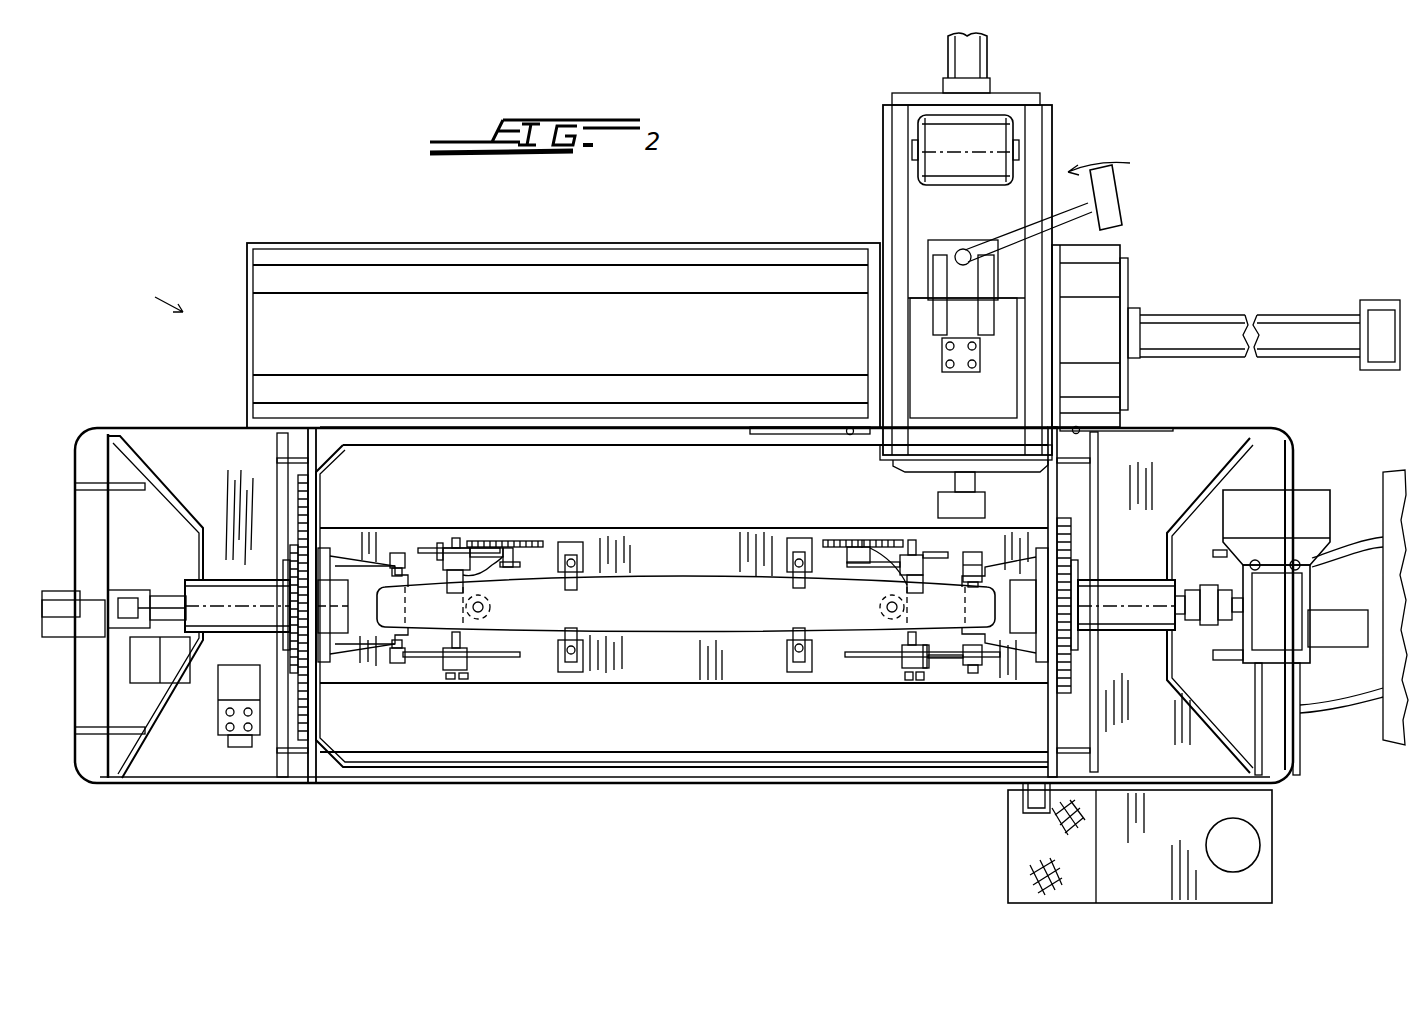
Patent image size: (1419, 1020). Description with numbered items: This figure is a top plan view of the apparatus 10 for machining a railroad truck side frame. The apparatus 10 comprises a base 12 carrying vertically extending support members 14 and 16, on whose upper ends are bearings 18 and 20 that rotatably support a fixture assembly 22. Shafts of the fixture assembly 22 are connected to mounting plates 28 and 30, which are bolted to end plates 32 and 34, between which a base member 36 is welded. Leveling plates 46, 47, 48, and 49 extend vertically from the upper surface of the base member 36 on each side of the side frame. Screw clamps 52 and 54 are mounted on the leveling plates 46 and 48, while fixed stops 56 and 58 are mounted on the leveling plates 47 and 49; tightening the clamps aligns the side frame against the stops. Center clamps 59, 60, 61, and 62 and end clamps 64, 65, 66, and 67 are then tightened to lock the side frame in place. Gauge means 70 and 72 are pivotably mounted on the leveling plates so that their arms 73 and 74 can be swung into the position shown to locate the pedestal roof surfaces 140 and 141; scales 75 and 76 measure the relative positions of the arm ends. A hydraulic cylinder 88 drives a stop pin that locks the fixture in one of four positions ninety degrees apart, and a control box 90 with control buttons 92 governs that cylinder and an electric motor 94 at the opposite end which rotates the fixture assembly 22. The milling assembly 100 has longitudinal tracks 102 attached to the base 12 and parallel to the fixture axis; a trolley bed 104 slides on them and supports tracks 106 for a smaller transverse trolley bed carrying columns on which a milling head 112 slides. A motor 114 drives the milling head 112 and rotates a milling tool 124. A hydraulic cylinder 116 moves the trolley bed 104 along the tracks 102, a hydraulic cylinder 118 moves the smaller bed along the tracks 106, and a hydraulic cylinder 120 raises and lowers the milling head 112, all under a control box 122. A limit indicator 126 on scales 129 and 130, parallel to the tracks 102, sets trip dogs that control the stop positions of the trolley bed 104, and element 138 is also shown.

The apparatus 10 is at (154, 294).
The base 12 is at (172, 424).
The support member 14 is at (185, 512).
The support member 16 is at (1180, 522).
The bearing 18 is at (236, 606).
The bearing 20 is at (1105, 632).
The fixture assembly 22 is at (664, 703).
The mounting plate 28 is at (296, 560).
The mounting plate 30 is at (1073, 548).
The end plate 32 is at (310, 490).
The end plate 34 is at (1063, 524).
The base member 36 is at (636, 527).
The leveling plate 46 is at (502, 660).
The leveling plate 47 is at (447, 548).
The leveling plate 48 is at (856, 658).
The leveling plate 49 is at (945, 552).
The screw clamp 52 is at (440, 600).
The screw clamp 54 is at (914, 681).
The fixed stop 56 is at (462, 568).
The fixed stop 58 is at (930, 666).
The center clamp 59 is at (580, 544).
The center clamp 60 is at (572, 673).
The center clamp 61 is at (801, 538).
The center clamp 62 is at (801, 673).
The end clamp 64 is at (394, 665).
The end clamp 65 is at (395, 552).
The end clamp 66 is at (974, 674).
The end clamp 67 is at (982, 560).
The gauge means 70 is at (505, 541).
The gauge means 72 is at (866, 533).
The arm 73 is at (487, 594).
The arm 74 is at (890, 572).
The scale 75 is at (545, 540).
The scale 76 is at (847, 547).
The hydraulic cylinder 88 is at (93, 590).
The control box 90 is at (220, 725).
The control buttons 92 is at (232, 700).
The electric motor 94 is at (1310, 590).
The milling assembly 100 is at (1122, 159).
The longitudinal tracks 102 is at (505, 372).
The trolley bed 104 is at (882, 340).
The longitudinal tracks 106 is at (885, 198).
The milling head 112 is at (922, 463).
The motor 114 is at (1003, 118).
The hydraulic cylinder 116 is at (1175, 318).
The hydraulic cylinder 118 is at (990, 45).
The hydraulic cylinder 120 is at (955, 372).
The control box 122 is at (1122, 202).
The milling tool 124 is at (985, 506).
The limit indicator 126 is at (1080, 430).
The scale 129 is at (1175, 430).
The scale 130 is at (760, 428).
The ring 138 is at (848, 428).
The pedestal roof surface 140 is at (422, 636).
The pedestal roof surface 141 is at (953, 668).